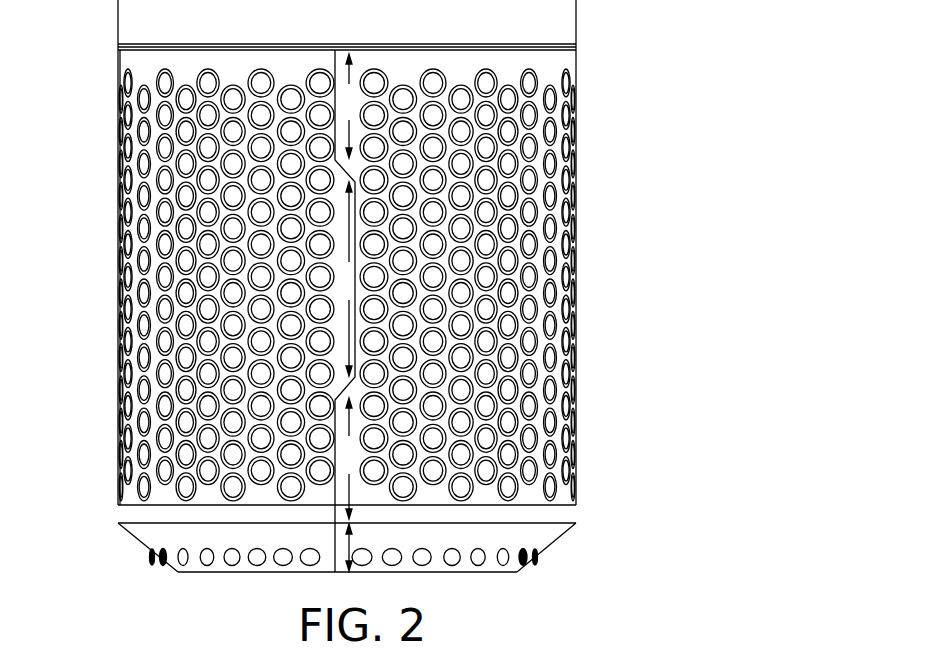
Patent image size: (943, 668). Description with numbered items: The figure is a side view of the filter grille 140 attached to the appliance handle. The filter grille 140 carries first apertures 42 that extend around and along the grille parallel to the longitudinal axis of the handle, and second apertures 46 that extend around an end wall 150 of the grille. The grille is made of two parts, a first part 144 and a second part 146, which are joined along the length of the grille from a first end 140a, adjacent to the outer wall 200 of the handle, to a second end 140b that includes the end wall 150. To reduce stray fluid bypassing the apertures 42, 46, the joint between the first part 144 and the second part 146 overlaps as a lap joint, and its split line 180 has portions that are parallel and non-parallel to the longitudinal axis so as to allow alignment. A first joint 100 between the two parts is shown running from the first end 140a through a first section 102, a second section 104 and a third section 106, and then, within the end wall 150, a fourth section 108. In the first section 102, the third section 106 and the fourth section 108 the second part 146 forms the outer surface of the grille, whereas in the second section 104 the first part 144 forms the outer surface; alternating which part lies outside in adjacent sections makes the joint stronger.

The first joint 100 is at (333, 493).
The outer wall 200 is at (568, 37).
The split line 180 is at (331, 62).
The first part 144 is at (309, 75).
The second part 146 is at (423, 75).
The first section 102 is at (349, 106).
The second section 104 is at (349, 279).
The third section 106 is at (349, 458).
The fourth section 108 is at (358, 540).
The filter grille 140 is at (125, 60).
The first end 140a is at (576, 52).
The second end 140b is at (178, 573).
The end wall 150 is at (132, 530).
The first apertures 42 is at (530, 373).
The second apertures 46 is at (497, 565).